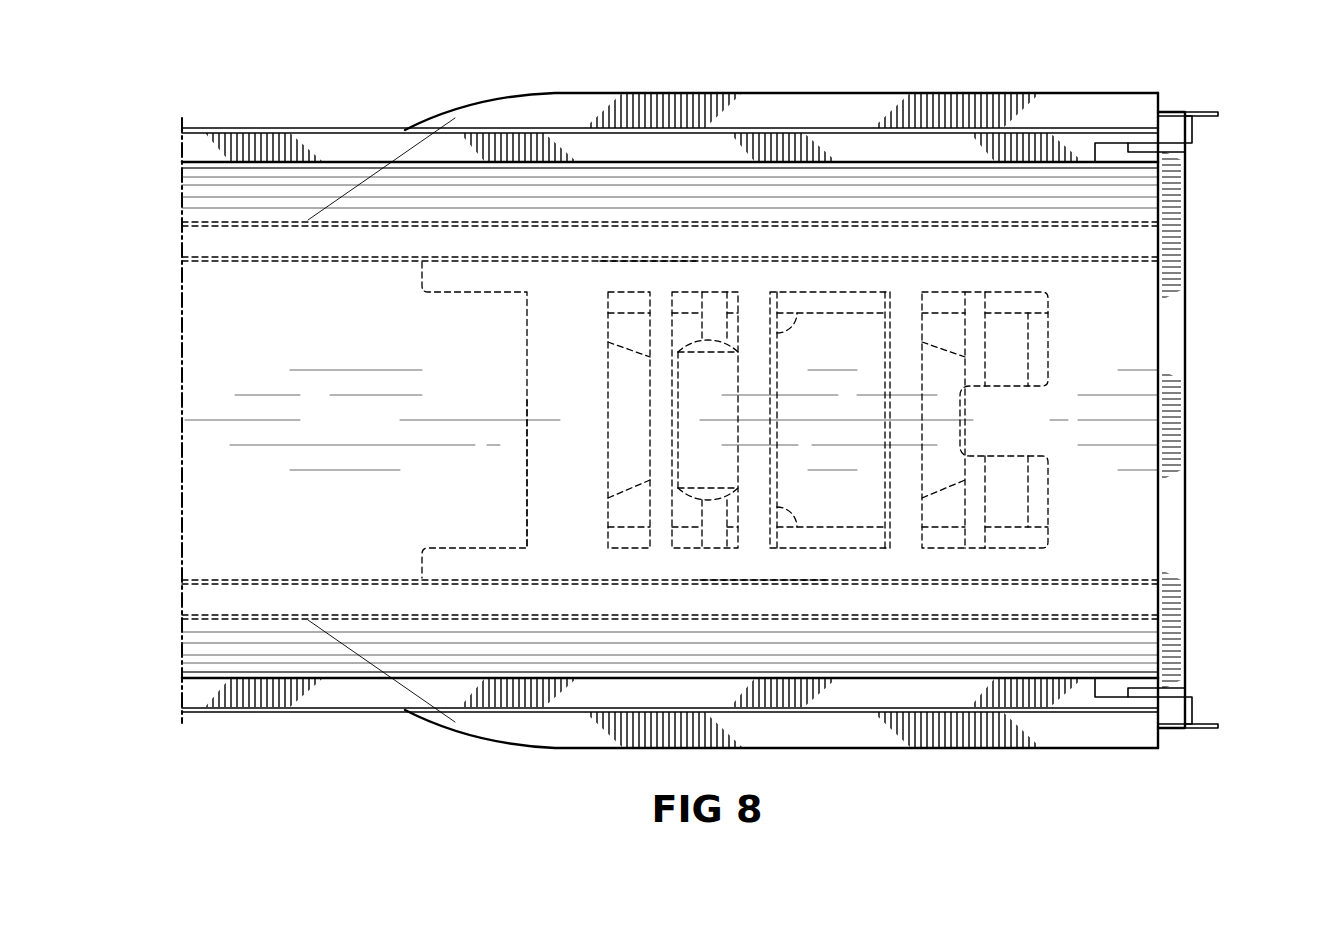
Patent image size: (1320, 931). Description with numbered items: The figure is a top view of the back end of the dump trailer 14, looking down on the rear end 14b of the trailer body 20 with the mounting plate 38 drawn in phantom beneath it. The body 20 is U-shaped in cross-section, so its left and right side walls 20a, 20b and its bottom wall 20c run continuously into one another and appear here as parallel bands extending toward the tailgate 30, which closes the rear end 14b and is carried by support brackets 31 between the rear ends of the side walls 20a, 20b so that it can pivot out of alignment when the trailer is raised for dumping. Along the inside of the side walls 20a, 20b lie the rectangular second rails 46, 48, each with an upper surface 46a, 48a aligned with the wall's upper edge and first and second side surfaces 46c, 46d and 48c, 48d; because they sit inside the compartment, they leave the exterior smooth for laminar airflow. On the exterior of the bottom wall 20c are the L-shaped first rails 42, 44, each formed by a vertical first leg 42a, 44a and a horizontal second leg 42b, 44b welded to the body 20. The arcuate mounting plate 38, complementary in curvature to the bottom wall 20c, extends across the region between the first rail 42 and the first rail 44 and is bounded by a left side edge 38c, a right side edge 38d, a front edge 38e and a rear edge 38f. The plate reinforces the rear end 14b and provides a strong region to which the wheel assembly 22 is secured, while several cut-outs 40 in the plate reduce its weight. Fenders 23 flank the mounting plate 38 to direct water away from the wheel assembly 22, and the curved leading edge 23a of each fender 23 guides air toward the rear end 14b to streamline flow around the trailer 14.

The dump trailer 14 is at (200, 88).
The rear end 14b is at (1212, 233).
The trailer body 20 is at (216, 470).
The left side wall 20a is at (252, 713).
The right side wall 20b is at (247, 128).
The bottom wall 20c is at (382, 431).
The wheel assembly 22 is at (650, 389).
The fender 23 is at (501, 96).
The leading edge 23a is at (323, 198).
The tailgate 30 is at (1175, 512).
The support brackets 31 is at (1178, 124).
The mounting plate 38 is at (528, 340).
The left side edge 38c is at (768, 578).
The right side edge 38d is at (636, 262).
The front edge 38e is at (525, 483).
The rear edge 38f is at (1160, 336).
The cut-outs 40 is at (494, 550).
The first rail 42 is at (262, 578).
The vertical first leg 42a is at (288, 622).
The horizontal second leg 42b is at (332, 598).
The second first rail 44 is at (262, 262).
The vertical first leg 44a is at (288, 218).
The horizontal second leg 44b is at (332, 243).
The second rail 46 is at (329, 710).
The upper surface 46a is at (360, 695).
The first side surface 46c is at (837, 710).
The second side surface 46d is at (850, 678).
The second rail 48 is at (328, 130).
The upper surface 48a is at (360, 145).
The first side surface 48c is at (851, 163).
The second side surface 48d is at (838, 132).